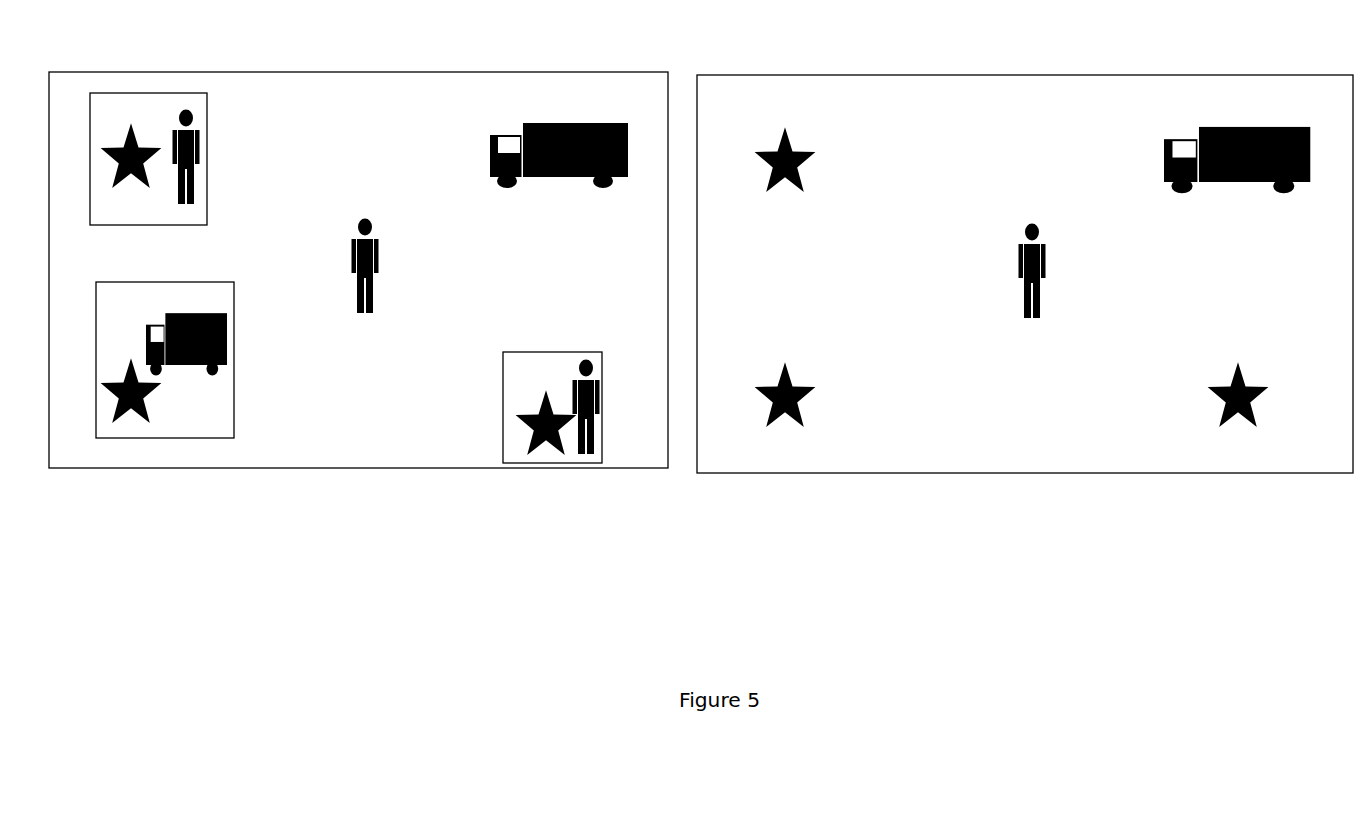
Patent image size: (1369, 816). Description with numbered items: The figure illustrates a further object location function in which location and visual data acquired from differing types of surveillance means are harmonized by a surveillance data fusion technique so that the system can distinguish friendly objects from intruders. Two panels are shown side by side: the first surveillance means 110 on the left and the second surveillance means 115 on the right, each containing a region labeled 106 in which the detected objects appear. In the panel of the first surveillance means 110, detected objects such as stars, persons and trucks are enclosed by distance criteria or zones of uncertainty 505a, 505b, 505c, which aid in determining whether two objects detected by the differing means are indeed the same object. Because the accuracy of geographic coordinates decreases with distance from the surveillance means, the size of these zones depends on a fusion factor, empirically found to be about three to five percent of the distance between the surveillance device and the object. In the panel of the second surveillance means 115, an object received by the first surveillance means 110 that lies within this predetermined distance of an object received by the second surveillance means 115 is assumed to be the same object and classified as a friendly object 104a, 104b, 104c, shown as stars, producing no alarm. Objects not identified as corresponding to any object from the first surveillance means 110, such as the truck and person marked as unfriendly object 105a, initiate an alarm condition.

The first surveillance means 110 is at (454, 72).
The second surveillance means 115 is at (1120, 75).
The monitored scene 106 is at (355, 130).
The zone of uncertainty 505a is at (207, 167).
The zone of uncertainty 505b is at (234, 374).
The zone of uncertainty 505c is at (565, 352).
The friendly object 104a is at (813, 153).
The friendly object 104b is at (805, 397).
The friendly object 104c is at (1212, 392).
The unfriendly object 105a is at (1166, 157).